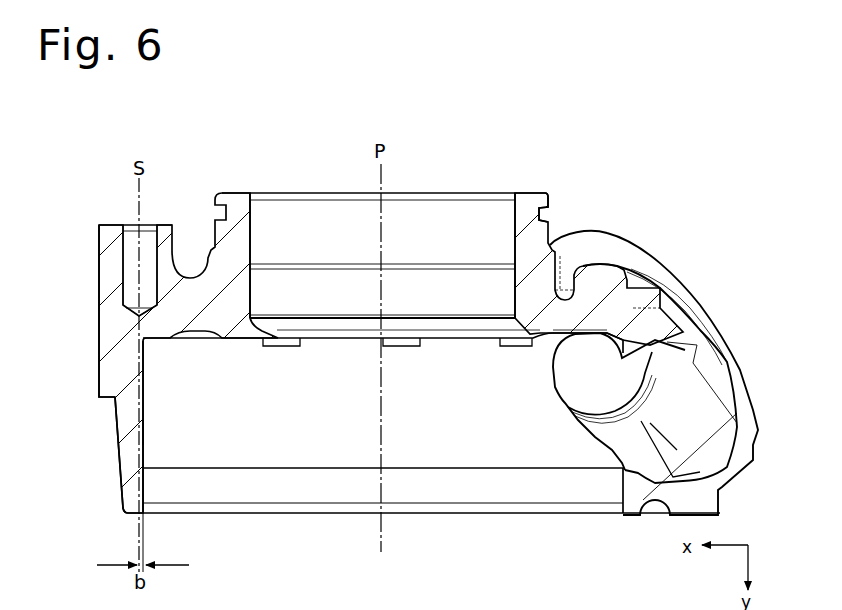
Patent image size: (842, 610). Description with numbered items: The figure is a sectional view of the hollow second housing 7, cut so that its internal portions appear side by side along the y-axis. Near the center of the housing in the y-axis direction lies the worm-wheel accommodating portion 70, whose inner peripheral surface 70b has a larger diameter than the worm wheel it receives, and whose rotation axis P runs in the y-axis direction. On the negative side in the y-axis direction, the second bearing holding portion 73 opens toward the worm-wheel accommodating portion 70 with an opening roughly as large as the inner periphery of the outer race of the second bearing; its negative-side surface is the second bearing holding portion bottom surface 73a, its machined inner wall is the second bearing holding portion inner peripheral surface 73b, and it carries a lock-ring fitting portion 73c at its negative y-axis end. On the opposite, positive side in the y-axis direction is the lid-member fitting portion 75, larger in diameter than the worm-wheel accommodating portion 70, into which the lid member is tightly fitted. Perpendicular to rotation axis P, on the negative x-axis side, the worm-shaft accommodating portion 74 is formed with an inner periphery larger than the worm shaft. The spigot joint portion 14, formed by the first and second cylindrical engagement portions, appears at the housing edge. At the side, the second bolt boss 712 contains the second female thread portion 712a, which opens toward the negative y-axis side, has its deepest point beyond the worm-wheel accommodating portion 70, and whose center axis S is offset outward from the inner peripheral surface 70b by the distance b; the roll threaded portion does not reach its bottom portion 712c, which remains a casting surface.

The second housing 7 is at (190, 192).
The spigot joint portion 14 is at (557, 226).
The worm-wheel accommodating portion 70 is at (133, 449).
The inner peripheral surface 70b is at (144, 432).
The second bearing holding portion 73 is at (365, 285).
The second bearing holding portion bottom surface 73a is at (259, 317).
The second bearing holding portion inner peripheral surface 73b is at (515, 298).
The lock-ring fitting portion 73c is at (508, 210).
The worm-shaft accommodating portion 74 is at (676, 317).
The lid-member fitting portion 75 is at (133, 492).
The second bolt boss 712 is at (110, 266).
The second female thread portion 712a is at (133, 228).
The bottom portion 712c is at (137, 312).